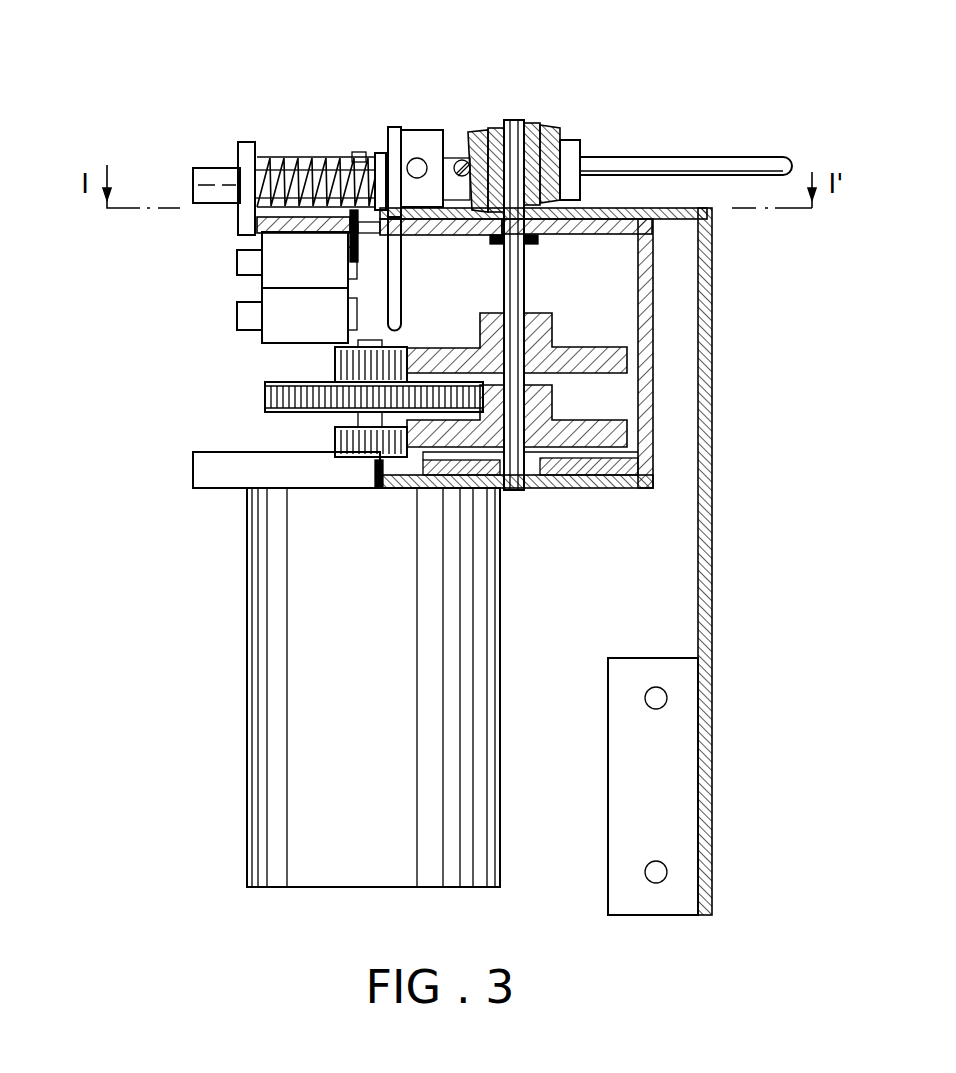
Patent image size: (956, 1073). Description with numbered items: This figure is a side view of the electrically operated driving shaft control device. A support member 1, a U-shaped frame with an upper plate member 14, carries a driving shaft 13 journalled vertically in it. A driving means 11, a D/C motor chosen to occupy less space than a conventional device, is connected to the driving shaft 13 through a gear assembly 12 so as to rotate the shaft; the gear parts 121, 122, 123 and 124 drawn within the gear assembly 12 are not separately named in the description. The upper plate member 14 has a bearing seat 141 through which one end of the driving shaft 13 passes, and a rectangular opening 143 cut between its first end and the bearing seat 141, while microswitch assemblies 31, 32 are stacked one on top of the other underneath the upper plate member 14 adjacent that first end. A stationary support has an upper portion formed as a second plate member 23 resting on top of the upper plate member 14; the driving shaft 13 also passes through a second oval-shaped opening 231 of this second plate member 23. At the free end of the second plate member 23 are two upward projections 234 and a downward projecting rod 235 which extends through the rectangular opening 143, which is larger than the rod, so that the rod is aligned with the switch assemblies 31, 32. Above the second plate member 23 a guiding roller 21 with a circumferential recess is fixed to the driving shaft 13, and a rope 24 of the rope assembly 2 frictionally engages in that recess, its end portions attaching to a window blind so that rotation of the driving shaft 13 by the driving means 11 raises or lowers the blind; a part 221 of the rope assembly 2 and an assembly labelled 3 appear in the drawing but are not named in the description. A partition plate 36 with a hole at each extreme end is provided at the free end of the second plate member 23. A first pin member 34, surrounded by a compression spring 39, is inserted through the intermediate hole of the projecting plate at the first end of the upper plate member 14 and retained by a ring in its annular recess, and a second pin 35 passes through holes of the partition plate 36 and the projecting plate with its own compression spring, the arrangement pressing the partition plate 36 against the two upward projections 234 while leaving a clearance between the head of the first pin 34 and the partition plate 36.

The support member 1 is at (238, 497).
The driving means 11 is at (500, 581).
The gear assembly 12 is at (614, 404).
The pinion gear 121 is at (335, 440).
The lower bearing bushing 122 is at (613, 430).
The large gear 123 is at (265, 395).
The upper bearing bushing 124 is at (552, 324).
The driving shaft 13 is at (515, 124).
The upper plate member 14 is at (655, 301).
The bearing seat 141 is at (540, 245).
The rectangular opening 143 is at (405, 240).
The rope assembly 2 is at (541, 112).
The guiding roller 21 is at (471, 130).
The clutch sleeve 221 is at (571, 144).
The second plate member 23 is at (712, 261).
The second oval-shaped opening 231 is at (602, 209).
The upward projections 234 is at (395, 126).
The downward projecting rod 235 is at (402, 303).
The rope 24 is at (677, 157).
The spring actuator unit 3 is at (283, 140).
The microswitch assembly 31 is at (240, 262).
The microswitch assembly 32 is at (240, 320).
The first pin member 34 is at (357, 160).
The second pin 35 is at (213, 166).
The partition plate 36 is at (381, 152).
The compression spring 39 is at (300, 160).